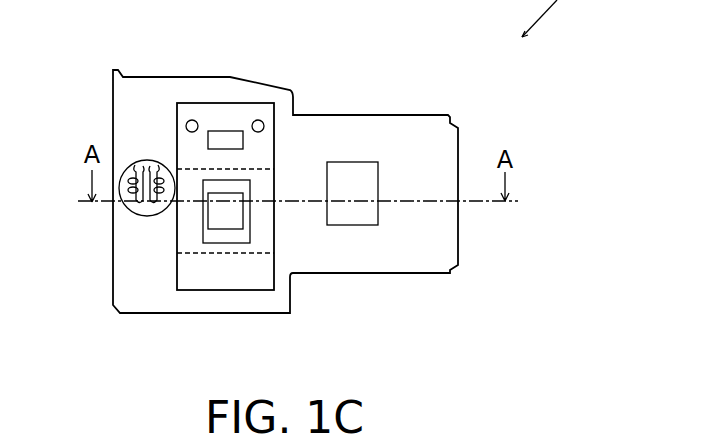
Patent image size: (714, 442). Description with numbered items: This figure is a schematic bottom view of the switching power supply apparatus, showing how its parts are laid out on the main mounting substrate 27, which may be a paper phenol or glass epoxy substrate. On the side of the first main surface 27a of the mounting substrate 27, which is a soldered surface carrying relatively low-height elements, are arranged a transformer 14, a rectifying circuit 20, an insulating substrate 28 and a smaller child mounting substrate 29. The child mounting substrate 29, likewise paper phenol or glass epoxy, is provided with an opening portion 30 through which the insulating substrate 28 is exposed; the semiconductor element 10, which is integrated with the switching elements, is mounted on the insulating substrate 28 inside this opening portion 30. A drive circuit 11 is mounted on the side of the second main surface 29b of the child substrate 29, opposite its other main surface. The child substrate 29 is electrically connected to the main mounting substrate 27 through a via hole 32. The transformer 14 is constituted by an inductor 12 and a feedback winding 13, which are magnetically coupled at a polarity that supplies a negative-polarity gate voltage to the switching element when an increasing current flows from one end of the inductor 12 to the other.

The semiconductor element 10 is at (223, 217).
The drive circuit 11 is at (228, 140).
The inductor 12 is at (122, 207).
The feedback winding 13 is at (150, 217).
The transformer 14 is at (97, 278).
The rectifying circuit 20 is at (367, 215).
The mounting substrate 27 is at (433, 112).
The first main surface 27a is at (388, 140).
The insulating substrate 28 is at (263, 230).
The mounting substrate (child substrate) 29 is at (202, 292).
The second main surface 29b is at (183, 272).
The opening portion 30 is at (240, 237).
The via hole 32 is at (192, 121).